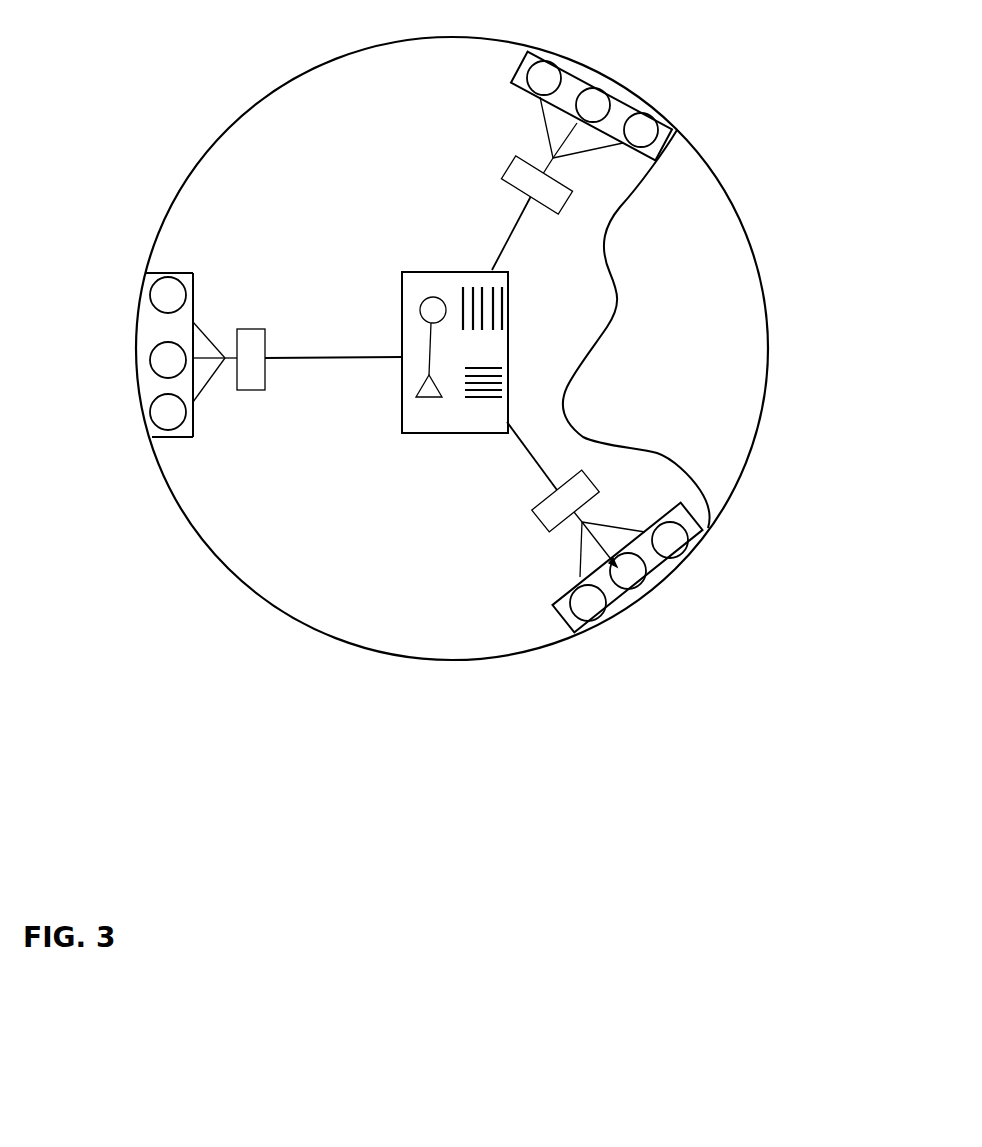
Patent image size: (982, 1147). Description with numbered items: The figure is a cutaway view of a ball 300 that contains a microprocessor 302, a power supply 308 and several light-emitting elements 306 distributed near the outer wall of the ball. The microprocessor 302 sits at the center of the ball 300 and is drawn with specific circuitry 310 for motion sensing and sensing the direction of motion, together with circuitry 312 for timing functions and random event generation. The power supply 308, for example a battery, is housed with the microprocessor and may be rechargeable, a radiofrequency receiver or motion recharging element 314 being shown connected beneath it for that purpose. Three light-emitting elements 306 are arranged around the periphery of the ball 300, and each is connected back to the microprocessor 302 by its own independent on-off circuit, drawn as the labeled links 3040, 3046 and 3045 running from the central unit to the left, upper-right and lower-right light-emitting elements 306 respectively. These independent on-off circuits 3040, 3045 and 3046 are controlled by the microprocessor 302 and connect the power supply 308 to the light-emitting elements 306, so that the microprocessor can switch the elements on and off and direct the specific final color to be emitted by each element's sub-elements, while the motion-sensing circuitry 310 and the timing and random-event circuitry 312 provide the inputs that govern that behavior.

The ball 300 is at (732, 190).
The microprocessor 302 is at (390, 445).
The light-emitting elements 306 is at (142, 387).
The power supply 308 is at (434, 304).
The circuitry for motion sensing and direction of motion 310 is at (495, 312).
The circuitry for timing functions and random event generation 312 is at (485, 388).
The radiofrequency receiver or motion recharging element 314 is at (416, 392).
The communication link 3040 is at (297, 362).
The communication link 3045 is at (576, 499).
The communication link 3046 is at (557, 183).